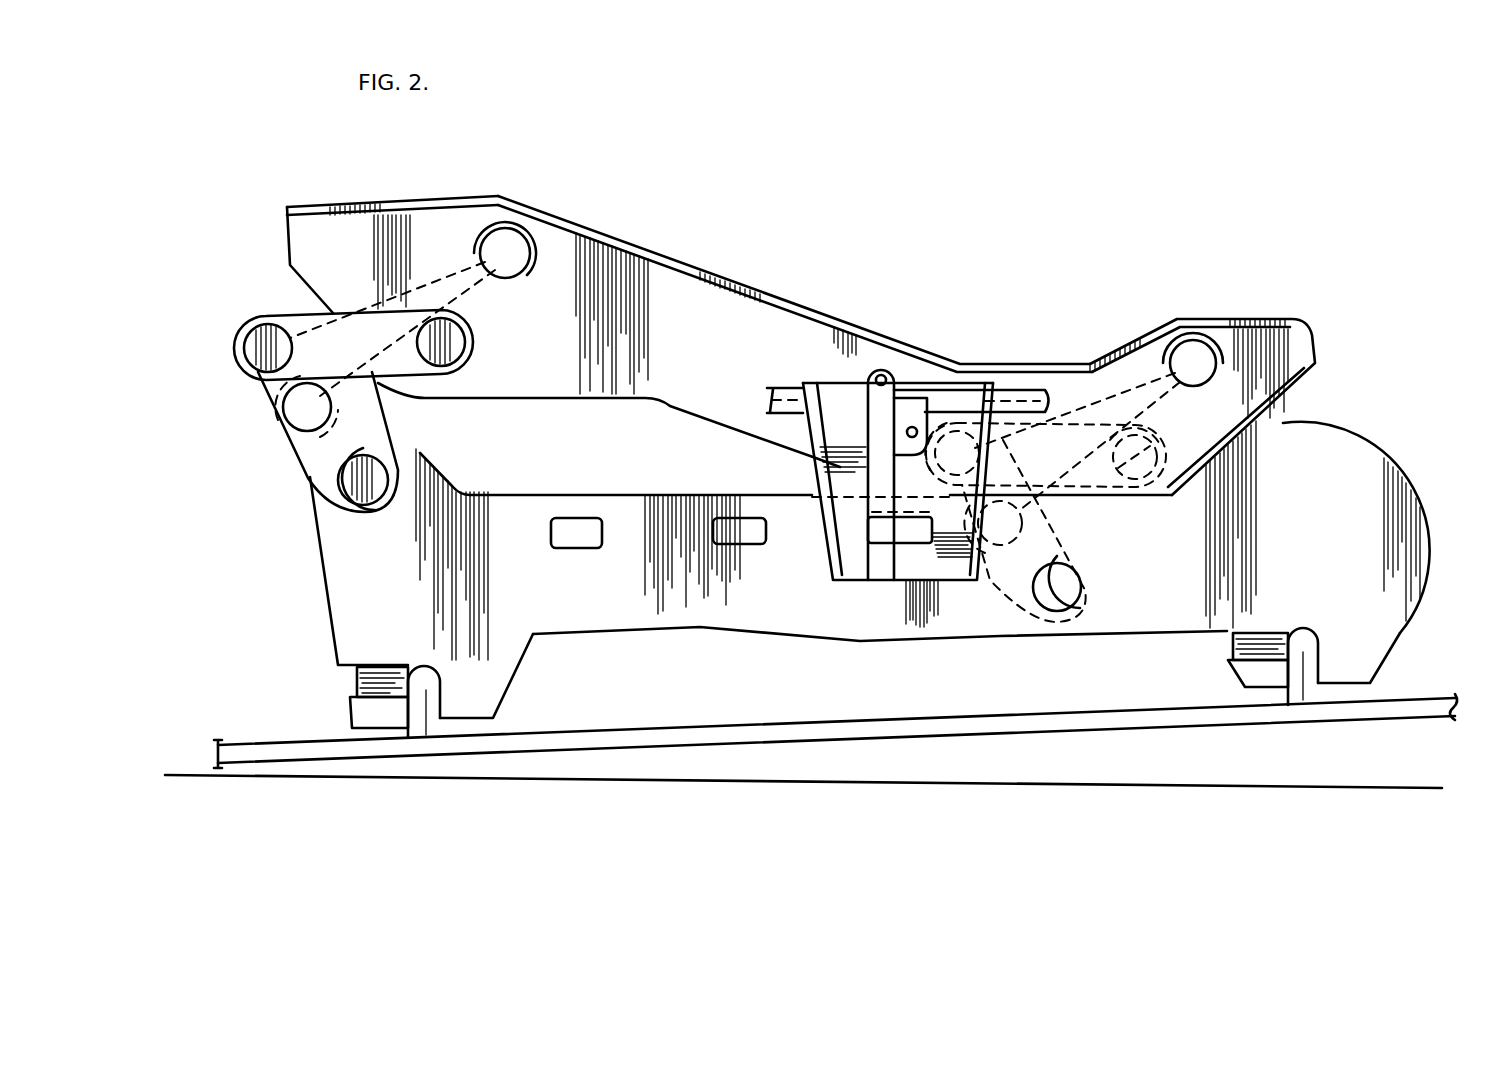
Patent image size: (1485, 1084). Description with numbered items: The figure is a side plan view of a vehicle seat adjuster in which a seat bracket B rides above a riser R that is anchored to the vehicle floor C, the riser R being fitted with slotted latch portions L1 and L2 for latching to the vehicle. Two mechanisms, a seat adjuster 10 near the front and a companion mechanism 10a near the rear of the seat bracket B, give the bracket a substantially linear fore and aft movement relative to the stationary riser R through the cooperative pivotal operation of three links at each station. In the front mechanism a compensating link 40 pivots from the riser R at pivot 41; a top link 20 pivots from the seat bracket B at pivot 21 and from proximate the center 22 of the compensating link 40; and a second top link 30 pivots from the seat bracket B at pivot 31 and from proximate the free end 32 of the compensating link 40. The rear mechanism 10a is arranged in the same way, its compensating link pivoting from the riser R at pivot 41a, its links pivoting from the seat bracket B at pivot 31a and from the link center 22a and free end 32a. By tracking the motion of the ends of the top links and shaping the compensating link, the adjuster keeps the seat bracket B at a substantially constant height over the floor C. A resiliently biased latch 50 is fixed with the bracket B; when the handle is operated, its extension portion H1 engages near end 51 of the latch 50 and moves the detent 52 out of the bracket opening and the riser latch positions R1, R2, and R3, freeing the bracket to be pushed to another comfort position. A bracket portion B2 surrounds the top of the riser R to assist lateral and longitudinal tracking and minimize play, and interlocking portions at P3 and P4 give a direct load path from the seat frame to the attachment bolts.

The seat adjuster 10 is at (399, 347).
The seat adjuster mechanism 10a is at (1120, 435).
The link 20 is at (462, 253).
The pivot 21 is at (513, 243).
The link 30 is at (380, 330).
The pivot 31 is at (466, 348).
The pivot 31a is at (1113, 450).
The free end of link 32 is at (240, 372).
The free end of link 32a is at (955, 440).
The center of link 22 is at (290, 408).
The center of link 22a is at (977, 565).
The compensating link 40 is at (284, 440).
The pivot 41 is at (366, 498).
The pivot 41a is at (1083, 590).
The latching mechanism 50 is at (823, 397).
The end of latch 51 is at (900, 375).
The detent 52 is at (868, 530).
The seat bracket B is at (672, 290).
The portion of seat bracket B2 is at (826, 545).
The riser R is at (358, 567).
The latch position R1 is at (582, 540).
The latch position R2 is at (735, 538).
The latch position R3 is at (900, 552).
The portion of handle extension H1 is at (780, 396).
The latch mechanism L1 is at (447, 677).
The latch mechanism L2 is at (1340, 648).
The interlocking portion P3 is at (415, 740).
The interlocking portion P4 is at (1285, 700).
The floor C is at (935, 718).